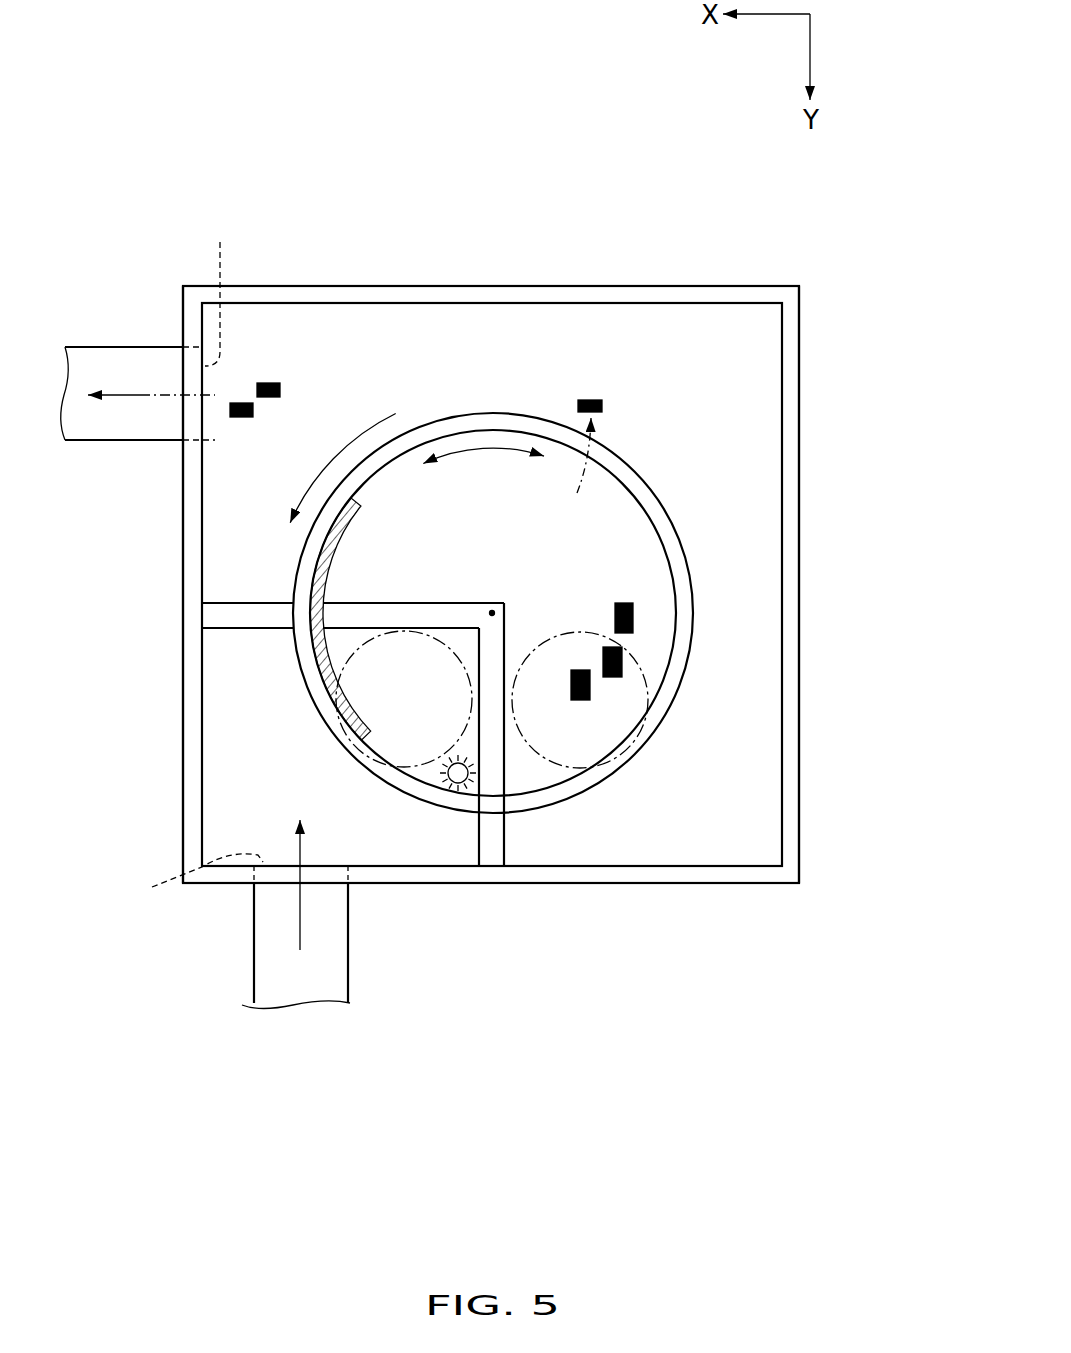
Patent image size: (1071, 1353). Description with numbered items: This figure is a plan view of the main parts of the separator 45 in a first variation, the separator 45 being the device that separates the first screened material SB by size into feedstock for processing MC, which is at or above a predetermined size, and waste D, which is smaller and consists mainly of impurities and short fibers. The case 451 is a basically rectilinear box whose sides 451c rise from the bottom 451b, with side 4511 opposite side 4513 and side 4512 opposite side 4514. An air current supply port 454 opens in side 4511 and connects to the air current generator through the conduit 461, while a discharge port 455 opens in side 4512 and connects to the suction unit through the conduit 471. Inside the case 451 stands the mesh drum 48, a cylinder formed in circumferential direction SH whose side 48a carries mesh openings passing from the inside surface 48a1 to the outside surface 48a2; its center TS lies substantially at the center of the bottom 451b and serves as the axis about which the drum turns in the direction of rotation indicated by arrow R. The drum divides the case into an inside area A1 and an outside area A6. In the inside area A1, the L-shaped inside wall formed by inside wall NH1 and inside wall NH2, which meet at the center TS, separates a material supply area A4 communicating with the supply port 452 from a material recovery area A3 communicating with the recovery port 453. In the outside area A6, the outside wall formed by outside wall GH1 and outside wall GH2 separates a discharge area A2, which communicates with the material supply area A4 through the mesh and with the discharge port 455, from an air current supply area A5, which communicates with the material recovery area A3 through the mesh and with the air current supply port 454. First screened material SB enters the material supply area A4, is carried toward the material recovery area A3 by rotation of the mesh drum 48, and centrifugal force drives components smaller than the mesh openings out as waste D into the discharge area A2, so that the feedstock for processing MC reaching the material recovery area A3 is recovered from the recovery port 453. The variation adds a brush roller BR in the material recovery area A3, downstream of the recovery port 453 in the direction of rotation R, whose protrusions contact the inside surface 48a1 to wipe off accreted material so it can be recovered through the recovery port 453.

The separator 45 is at (498, 182).
The case 451 is at (790, 285).
The bottom 451b is at (290, 350).
The sides 451c is at (492, 584).
The side 4511 is at (748, 884).
The side 4512 is at (183, 735).
The side 4513 is at (588, 285).
The side 4514 is at (800, 757).
The supply port 452 is at (640, 733).
The recovery port 453 is at (343, 722).
The air current supply port 454 is at (184, 879).
The discharge port 455 is at (220, 291).
The conduit 461 is at (254, 937).
The conduit 471 is at (110, 347).
The mesh drum 48 is at (693, 593).
The side 48a is at (682, 622).
The inside surface 48a1 is at (663, 510).
The outside surface 48a2 is at (608, 484).
The center TS is at (496, 611).
The first screened material SB is at (633, 620).
The waste D is at (268, 381).
The feedstock for processing MC is at (330, 690).
The brush roller BR is at (458, 785).
The inside wall NH1 is at (393, 612).
The inside wall NH2 is at (495, 727).
The outside wall GH1 is at (235, 615).
The outside wall GH2 is at (493, 840).
The direction of rotation R is at (343, 468).
The circumferential direction SH is at (483, 468).
The inside area A1 is at (418, 505).
The discharge area A2 is at (688, 353).
The material recovery area A3 is at (430, 770).
The material supply area A4 is at (603, 725).
The air current supply area A5 is at (227, 753).
The outside area A6 is at (463, 395).